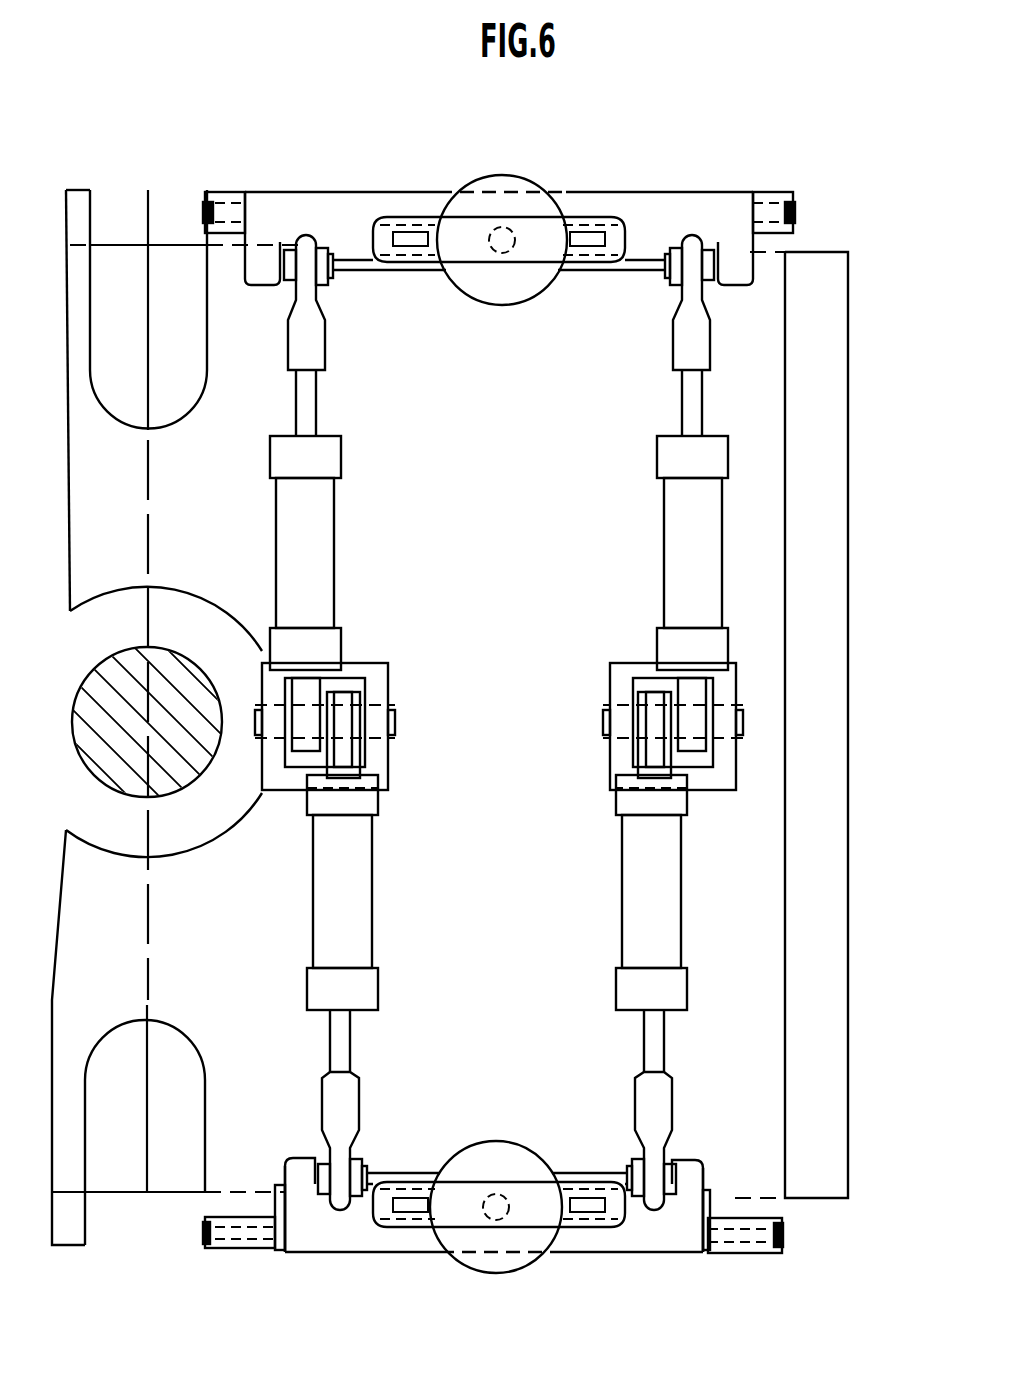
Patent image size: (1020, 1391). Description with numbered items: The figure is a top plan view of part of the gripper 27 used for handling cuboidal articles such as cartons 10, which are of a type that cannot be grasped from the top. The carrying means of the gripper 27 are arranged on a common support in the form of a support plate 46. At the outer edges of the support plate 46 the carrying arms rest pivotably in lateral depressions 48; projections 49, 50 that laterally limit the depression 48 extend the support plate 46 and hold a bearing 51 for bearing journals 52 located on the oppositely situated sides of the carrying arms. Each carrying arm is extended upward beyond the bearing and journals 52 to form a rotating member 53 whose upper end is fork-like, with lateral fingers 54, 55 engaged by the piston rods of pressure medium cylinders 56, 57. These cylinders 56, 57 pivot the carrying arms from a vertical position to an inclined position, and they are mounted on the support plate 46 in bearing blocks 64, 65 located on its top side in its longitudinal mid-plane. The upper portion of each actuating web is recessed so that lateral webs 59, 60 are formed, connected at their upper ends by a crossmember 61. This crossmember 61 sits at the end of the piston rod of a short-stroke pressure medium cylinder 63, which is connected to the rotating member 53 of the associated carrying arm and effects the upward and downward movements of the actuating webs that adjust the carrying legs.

The carton 10 is at (165, 277).
The gripper 27 is at (651, 165).
The support plate 46 is at (499, 450).
The lateral depression 48 is at (797, 247).
The projection 49 is at (252, 1250).
The projection 50 is at (735, 1255).
The bearing 51 is at (216, 1250).
The bearing journal 52 is at (203, 1230).
The rotating member 53 is at (705, 155).
The lateral finger 54 is at (268, 268).
The lateral finger 55 is at (733, 267).
The pressure medium cylinder 56 is at (322, 553).
The pressure medium cylinder 57 is at (355, 900).
The lateral web 59 is at (377, 228).
The lateral web 60 is at (623, 225).
The crossmember 61 is at (462, 228).
The pressure medium cylinder 63 is at (499, 176).
The bearing block 64 is at (395, 683).
The bearing block 65 is at (735, 690).